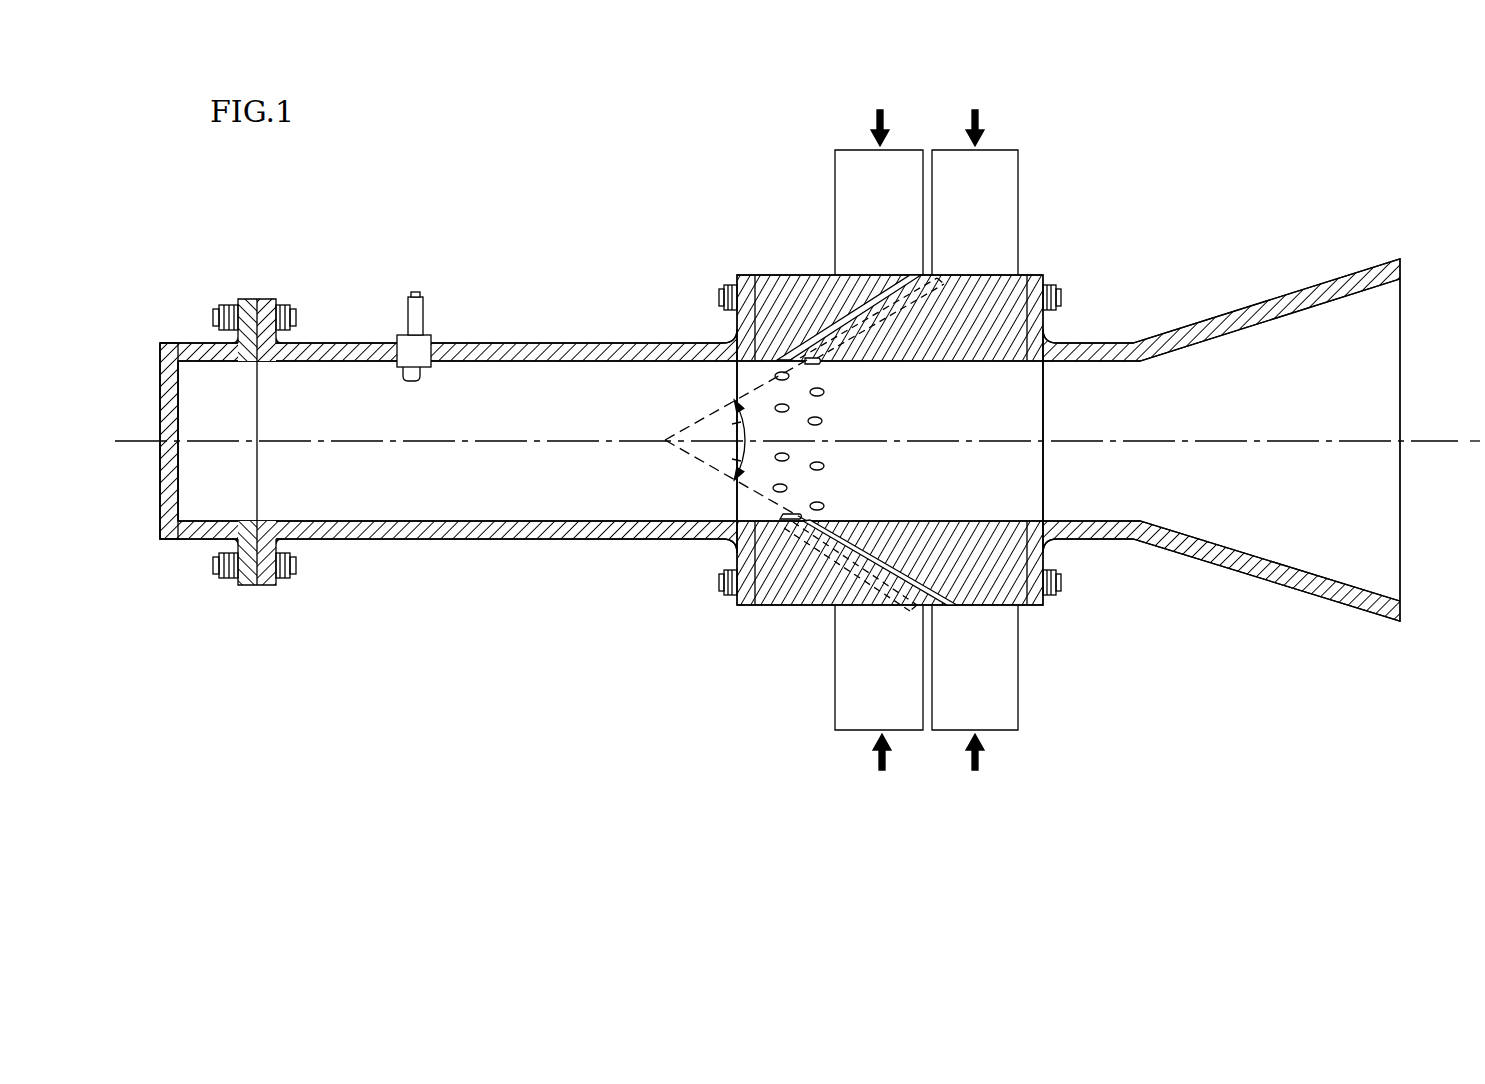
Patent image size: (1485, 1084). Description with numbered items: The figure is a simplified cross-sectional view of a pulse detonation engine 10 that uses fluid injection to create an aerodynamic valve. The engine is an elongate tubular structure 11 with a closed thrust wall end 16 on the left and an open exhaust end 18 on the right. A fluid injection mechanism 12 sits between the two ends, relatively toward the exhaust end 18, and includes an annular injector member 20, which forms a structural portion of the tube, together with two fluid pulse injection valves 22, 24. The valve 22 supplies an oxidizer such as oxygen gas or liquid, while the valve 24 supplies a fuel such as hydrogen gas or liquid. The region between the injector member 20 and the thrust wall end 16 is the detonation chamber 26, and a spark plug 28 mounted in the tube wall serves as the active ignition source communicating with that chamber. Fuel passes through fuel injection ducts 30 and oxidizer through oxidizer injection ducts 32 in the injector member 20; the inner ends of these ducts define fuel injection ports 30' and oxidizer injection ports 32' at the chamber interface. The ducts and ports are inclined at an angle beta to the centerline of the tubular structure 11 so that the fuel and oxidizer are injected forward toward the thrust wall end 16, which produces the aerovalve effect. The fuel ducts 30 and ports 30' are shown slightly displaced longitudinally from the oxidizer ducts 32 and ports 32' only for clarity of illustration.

The pulse detonation engine 10 is at (473, 203).
The elongate tubular structure 11 is at (561, 339).
The fluid injection mechanism 12 is at (1027, 246).
The thrust wall end 16 is at (159, 381).
The exhaust end 18 is at (1385, 355).
The annular injector member 20 is at (788, 285).
The fluid pulse injection valve 22 is at (835, 168).
The fluid pulse injection valve 24 is at (1018, 170).
The detonation chamber 26 is at (425, 487).
The spark plug 28 is at (412, 332).
The fuel injection ducts 30 is at (873, 440).
The fuel injection ports 30' is at (822, 394).
The oxidizer injection ducts 32 is at (862, 444).
The oxidizer injection ports 32' is at (804, 481).